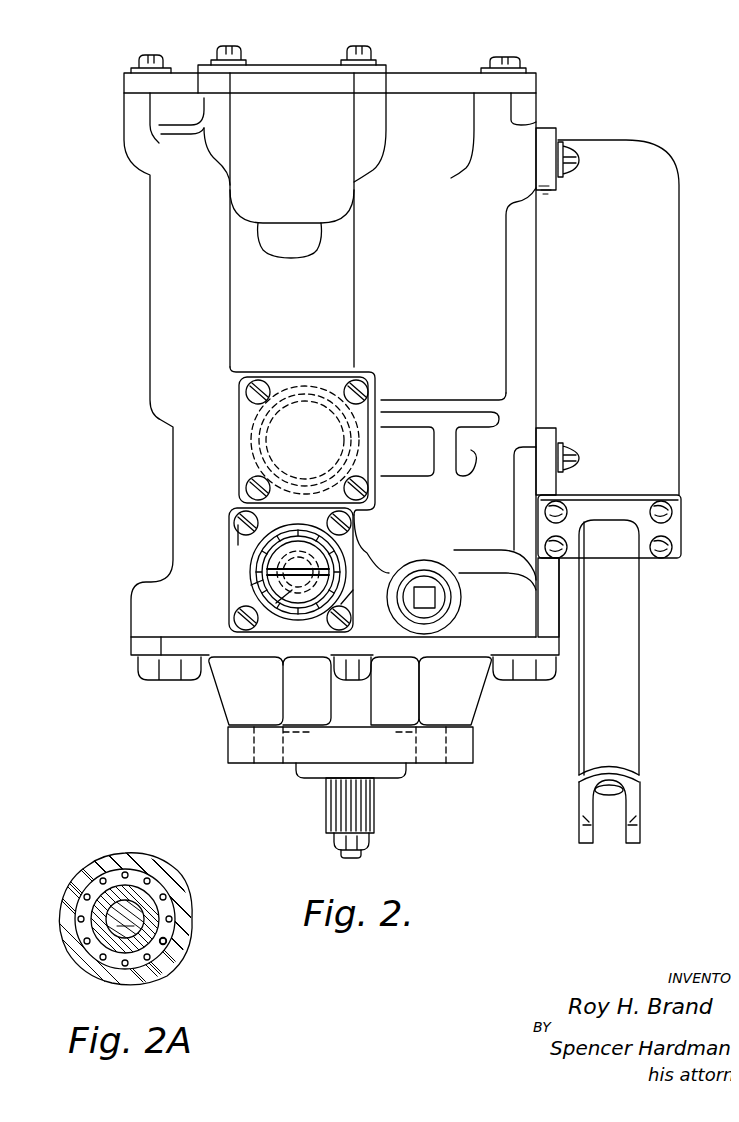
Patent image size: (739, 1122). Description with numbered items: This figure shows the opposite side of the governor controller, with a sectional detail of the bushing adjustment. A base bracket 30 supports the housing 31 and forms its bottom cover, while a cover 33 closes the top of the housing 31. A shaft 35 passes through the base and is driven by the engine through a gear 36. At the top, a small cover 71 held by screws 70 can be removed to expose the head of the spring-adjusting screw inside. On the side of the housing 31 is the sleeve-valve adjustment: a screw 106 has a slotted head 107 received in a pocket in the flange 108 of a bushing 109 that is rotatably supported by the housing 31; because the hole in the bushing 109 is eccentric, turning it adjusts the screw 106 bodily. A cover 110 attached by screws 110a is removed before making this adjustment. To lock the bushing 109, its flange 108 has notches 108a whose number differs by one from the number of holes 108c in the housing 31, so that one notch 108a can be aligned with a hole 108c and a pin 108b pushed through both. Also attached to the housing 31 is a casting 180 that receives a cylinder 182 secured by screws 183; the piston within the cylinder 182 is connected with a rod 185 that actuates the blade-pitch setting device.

In FIG. 2, the base bracket 30 is at (470, 718).
In FIG. 2, the housing 31 is at (160, 288).
In FIG. 2A, the housing 31 is at (190, 894).
In FIG. 2, the cover 33 is at (434, 82).
In FIG. 2, the shaft 35 is at (360, 852).
In FIG. 2, the gear 36 is at (374, 816).
In FIG. 2, the screws 70 is at (360, 52).
In FIG. 2, the cover 71 is at (300, 66).
In FIG. 2, the screw 106 is at (280, 586).
In FIG. 2A, the screw 106 is at (140, 928).
In FIG. 2, the slotted head 107 is at (275, 602).
In FIG. 2, the flange 108 is at (302, 613).
In FIG. 2, the notches 108a is at (355, 560).
In FIG. 2, the pin 108b is at (245, 565).
In FIG. 2A, the pin 108b is at (78, 918).
In FIG. 2A, the holes 108c is at (164, 945).
In FIG. 2A, the bushing 109 is at (150, 895).
In FIG. 2, the cover 110 is at (258, 632).
In FIG. 2, the screws 110a is at (352, 534).
In FIG. 2, the casting 180 is at (672, 413).
In FIG. 2, the cylinder 182 is at (680, 522).
In FIG. 2, the screws 183 is at (668, 553).
In FIG. 2, the rod 185 is at (638, 676).